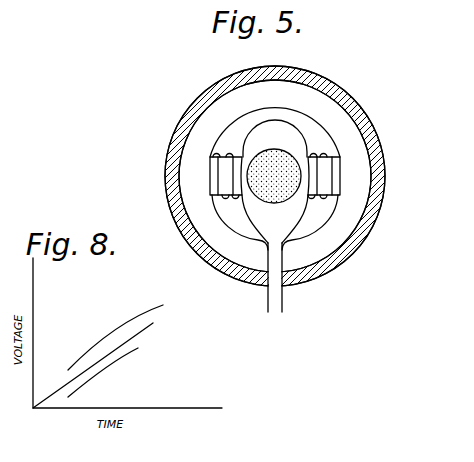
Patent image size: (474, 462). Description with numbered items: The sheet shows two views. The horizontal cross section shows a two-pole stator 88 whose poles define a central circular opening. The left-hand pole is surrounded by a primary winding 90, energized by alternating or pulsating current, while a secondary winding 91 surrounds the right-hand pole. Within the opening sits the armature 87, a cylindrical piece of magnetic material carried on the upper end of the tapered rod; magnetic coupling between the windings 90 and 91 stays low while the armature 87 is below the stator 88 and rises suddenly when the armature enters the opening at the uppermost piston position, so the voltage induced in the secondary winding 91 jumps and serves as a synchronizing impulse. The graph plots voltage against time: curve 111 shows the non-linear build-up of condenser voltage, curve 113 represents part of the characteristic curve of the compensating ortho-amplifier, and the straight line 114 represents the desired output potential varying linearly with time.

In FIG. 5, the stator 88 is at (210, 125).
In FIG. 5, the armature 87 is at (290, 156).
In FIG. 5, the primary winding 90 is at (213, 173).
In FIG. 5, the secondary winding 91 is at (335, 175).
In FIG. 8, the curve 111 is at (115, 330).
In FIG. 8, the curve 113 is at (118, 363).
In FIG. 8, the straight line 114 is at (60, 392).